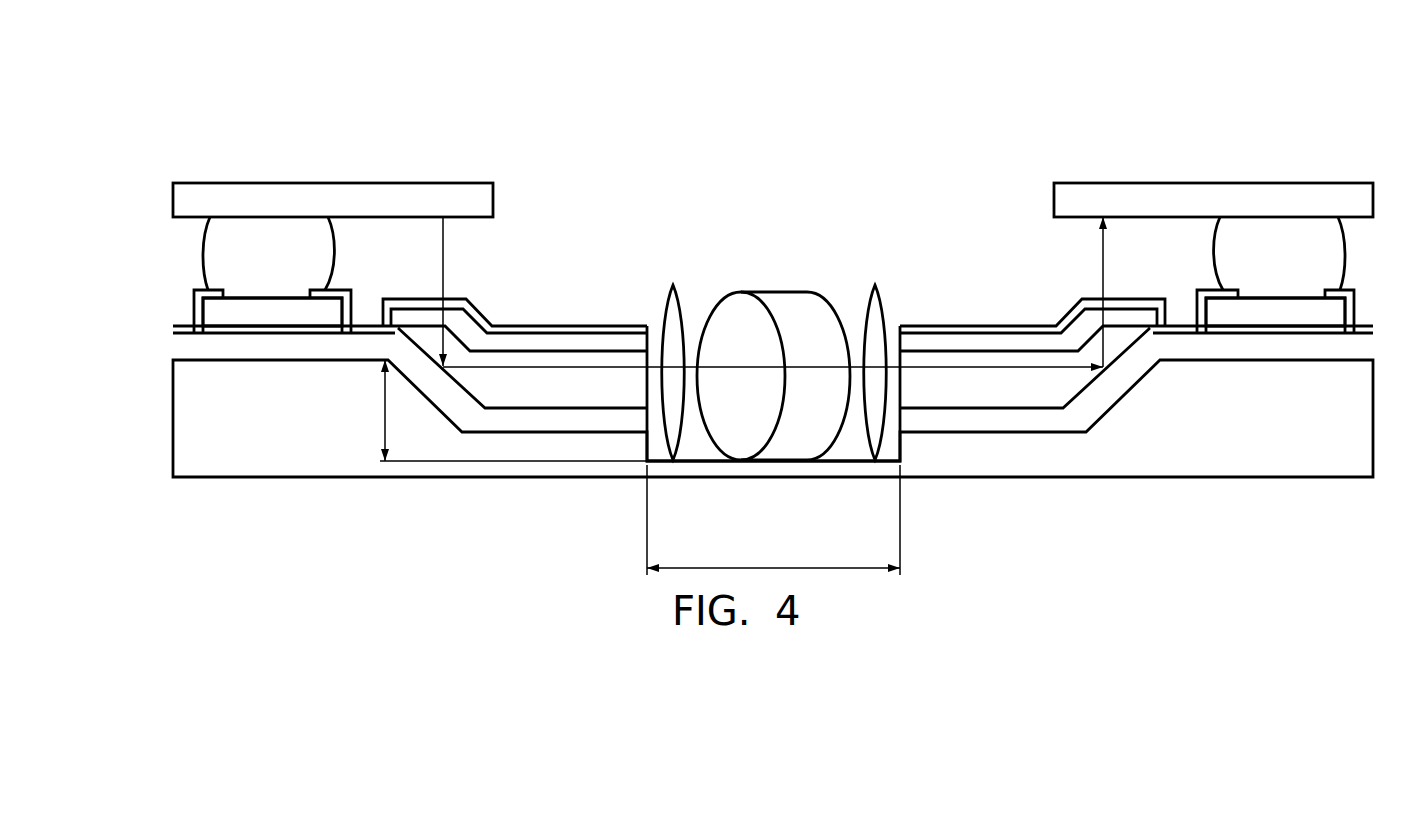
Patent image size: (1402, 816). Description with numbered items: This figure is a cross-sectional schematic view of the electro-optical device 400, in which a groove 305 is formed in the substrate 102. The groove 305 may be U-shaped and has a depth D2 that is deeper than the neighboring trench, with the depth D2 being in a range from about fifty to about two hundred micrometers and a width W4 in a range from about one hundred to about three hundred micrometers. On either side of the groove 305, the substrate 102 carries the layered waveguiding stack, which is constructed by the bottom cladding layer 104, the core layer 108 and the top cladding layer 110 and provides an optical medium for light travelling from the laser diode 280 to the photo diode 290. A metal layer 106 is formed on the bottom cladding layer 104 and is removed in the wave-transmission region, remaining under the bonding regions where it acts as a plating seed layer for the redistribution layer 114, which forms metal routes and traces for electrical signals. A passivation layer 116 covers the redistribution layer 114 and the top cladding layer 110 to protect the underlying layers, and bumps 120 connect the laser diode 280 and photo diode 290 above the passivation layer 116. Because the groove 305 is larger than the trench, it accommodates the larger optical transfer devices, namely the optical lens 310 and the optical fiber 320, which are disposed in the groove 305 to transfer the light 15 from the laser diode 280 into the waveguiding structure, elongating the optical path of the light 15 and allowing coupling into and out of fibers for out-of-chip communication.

The electro-optical device 400 is at (758, 67).
The substrate 102 is at (182, 418).
The bottom cladding layer 104 is at (182, 345).
The metal layer 106 is at (215, 331).
The core layer 108 is at (607, 388).
The top cladding layer 110 is at (552, 340).
The redistribution layer 114 is at (215, 312).
The passivation layer 116 is at (198, 295).
The solder bump 120 is at (242, 253).
The laser diode 280 is at (332, 193).
The photo diode 290 is at (1213, 193).
The light 15 is at (443, 255).
The groove 305 is at (692, 437).
The optical lens 310 is at (673, 285).
The optical fiber 320 is at (792, 313).
The depth of the groove D2 is at (495, 410).
The width of the groove W4 is at (773, 520).